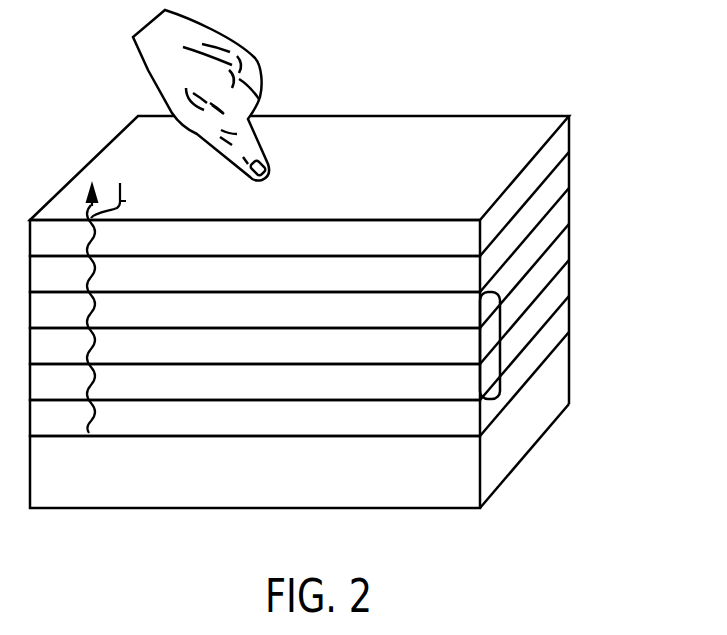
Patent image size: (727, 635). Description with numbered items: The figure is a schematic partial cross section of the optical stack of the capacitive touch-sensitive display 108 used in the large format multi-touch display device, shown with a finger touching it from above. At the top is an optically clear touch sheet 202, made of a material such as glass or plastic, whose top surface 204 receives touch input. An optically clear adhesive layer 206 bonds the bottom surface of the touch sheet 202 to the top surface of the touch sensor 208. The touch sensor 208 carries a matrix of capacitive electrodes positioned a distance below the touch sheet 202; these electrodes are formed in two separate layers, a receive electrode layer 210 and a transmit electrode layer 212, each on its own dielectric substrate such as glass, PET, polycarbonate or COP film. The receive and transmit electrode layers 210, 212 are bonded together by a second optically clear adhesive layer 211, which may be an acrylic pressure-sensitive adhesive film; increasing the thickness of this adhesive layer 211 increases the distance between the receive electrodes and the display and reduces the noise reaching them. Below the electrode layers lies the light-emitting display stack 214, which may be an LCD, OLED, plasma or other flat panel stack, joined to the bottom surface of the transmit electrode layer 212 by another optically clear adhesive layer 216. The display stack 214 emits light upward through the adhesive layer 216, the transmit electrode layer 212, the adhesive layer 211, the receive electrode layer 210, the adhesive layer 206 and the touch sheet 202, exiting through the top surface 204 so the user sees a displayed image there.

The capacitive touch-sensitive display 108 is at (397, 57).
The touch sheet 202 is at (345, 248).
The top surface 204 is at (443, 195).
The optically clear adhesive layer 206 is at (297, 283).
The touch sensor 208 is at (503, 342).
The receive electrode layer 210 is at (287, 320).
The second optically clear adhesive layer 211 is at (293, 356).
The transmit electrode layer 212 is at (287, 393).
The light-emitting display stack 214 is at (348, 481).
The optically clear adhesive layer 216 is at (297, 430).